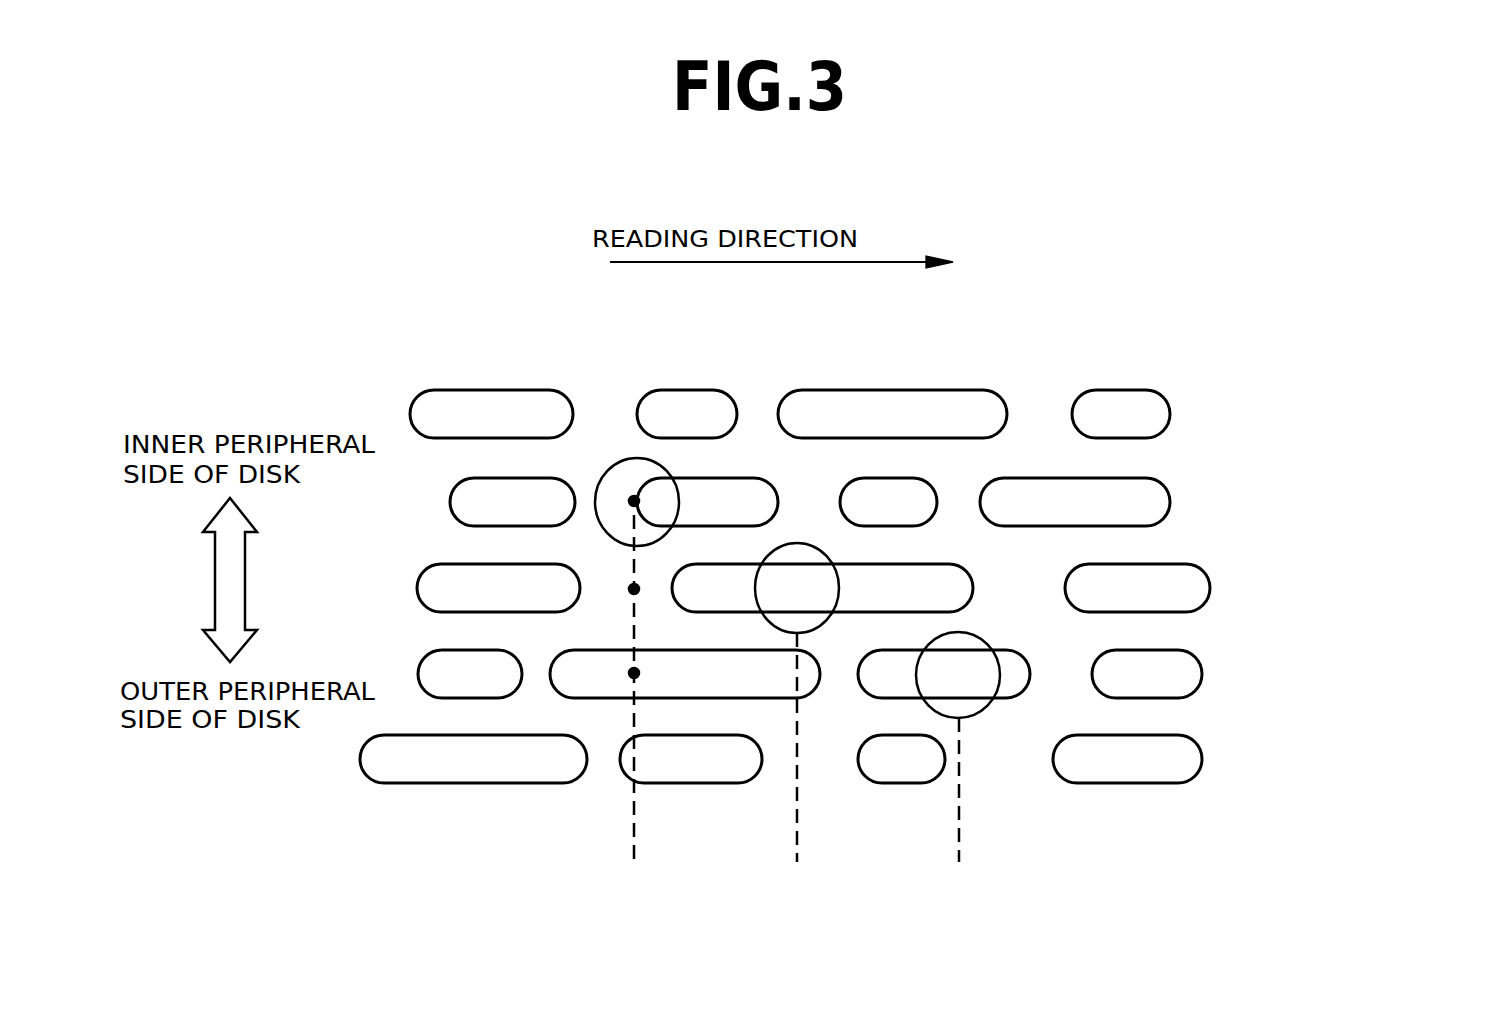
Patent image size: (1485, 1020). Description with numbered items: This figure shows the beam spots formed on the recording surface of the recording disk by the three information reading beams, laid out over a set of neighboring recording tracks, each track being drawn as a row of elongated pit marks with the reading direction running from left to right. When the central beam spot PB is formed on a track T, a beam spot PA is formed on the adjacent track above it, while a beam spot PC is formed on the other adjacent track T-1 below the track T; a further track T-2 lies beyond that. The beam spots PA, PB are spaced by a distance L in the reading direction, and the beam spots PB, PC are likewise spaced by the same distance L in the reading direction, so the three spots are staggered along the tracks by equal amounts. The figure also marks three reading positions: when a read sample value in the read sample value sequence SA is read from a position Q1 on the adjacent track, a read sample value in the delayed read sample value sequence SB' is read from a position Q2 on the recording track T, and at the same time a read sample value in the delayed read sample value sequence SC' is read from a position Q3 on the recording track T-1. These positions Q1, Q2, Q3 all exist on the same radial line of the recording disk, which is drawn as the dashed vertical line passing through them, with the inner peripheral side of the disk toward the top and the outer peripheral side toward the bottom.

The beam spot PA is at (630, 458).
The central beam spot PB is at (810, 543).
The beam spot PC is at (977, 632).
The position Q1 is at (617, 504).
The position Q2 is at (615, 592).
The position Q3 is at (615, 676).
The distance L is at (959, 832).
The track T is at (1232, 589).
The other adjacent track T-1 is at (1232, 673).
The track T-2 is at (1232, 760).